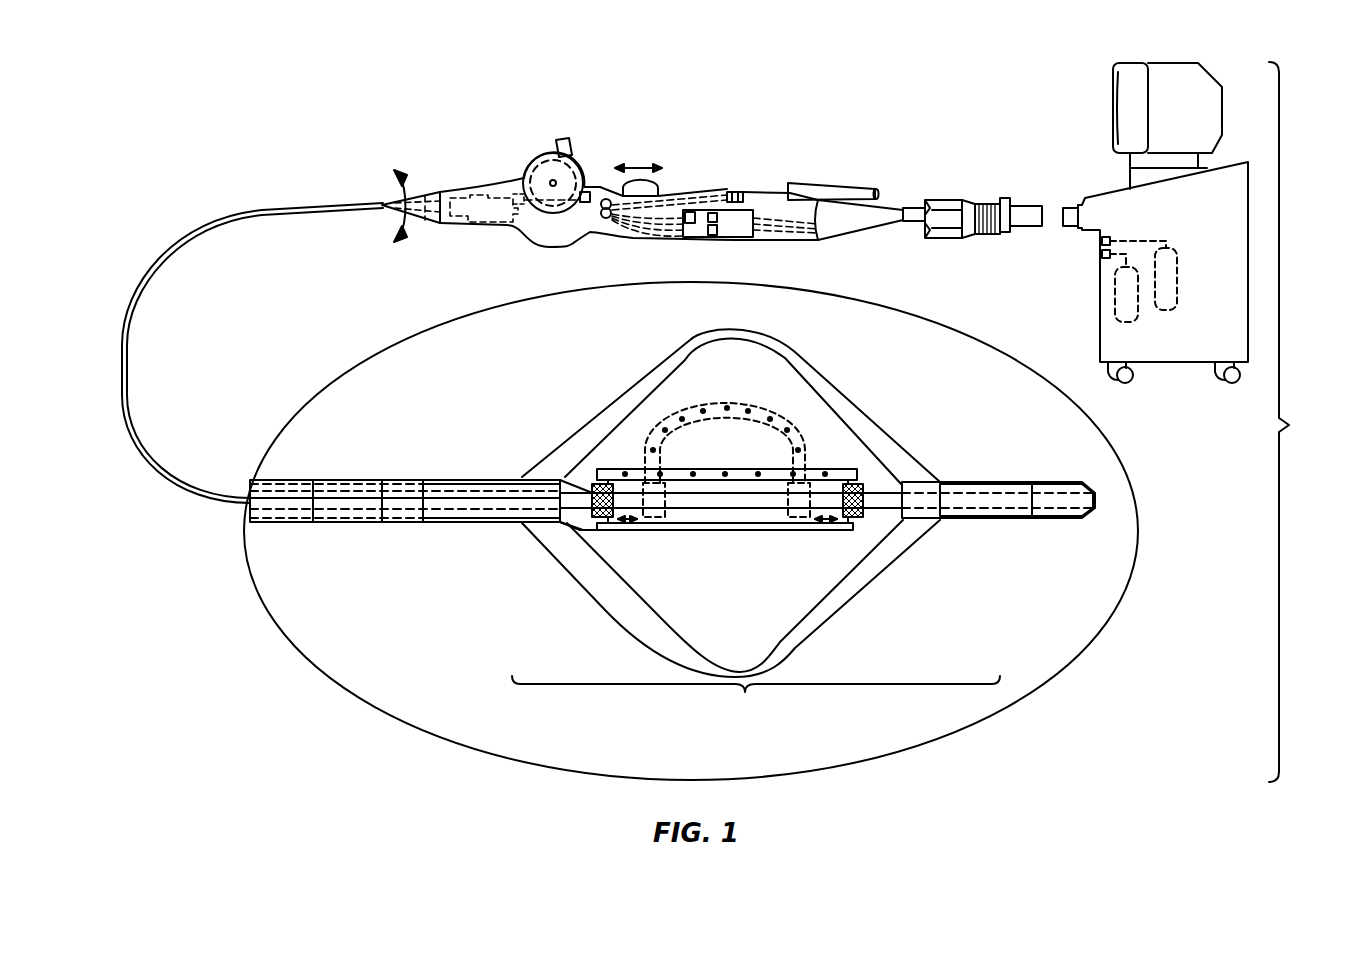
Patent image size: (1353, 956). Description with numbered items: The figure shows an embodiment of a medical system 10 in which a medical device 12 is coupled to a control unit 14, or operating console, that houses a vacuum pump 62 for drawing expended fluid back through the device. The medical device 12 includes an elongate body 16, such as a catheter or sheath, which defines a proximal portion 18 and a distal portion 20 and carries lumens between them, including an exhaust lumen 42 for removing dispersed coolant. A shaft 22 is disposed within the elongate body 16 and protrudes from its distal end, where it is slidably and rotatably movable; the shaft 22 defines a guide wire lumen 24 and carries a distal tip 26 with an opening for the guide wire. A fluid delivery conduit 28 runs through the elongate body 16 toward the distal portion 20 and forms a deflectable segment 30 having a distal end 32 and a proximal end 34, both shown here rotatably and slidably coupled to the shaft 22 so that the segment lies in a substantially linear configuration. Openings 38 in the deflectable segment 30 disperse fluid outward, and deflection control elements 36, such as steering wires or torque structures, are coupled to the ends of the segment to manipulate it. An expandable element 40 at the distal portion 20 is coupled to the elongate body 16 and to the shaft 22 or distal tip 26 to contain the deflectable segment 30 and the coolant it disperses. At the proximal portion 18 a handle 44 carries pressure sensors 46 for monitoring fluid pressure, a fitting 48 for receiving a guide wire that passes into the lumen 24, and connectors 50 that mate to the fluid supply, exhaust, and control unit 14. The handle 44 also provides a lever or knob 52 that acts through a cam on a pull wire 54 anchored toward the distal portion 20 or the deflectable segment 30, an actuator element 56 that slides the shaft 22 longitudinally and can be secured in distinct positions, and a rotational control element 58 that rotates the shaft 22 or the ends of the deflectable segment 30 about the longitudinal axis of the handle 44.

The medical system 10 is at (1298, 422).
The medical device 12 is at (772, 132).
The control unit 14 is at (1152, 223).
The elongate body 16 is at (242, 208).
The proximal portion 18 is at (382, 210).
The distal portion 20 is at (1131, 315).
The shaft 22 is at (885, 495).
The lumen 24 is at (1048, 518).
The distal tip 26 is at (1048, 482).
The fluid delivery conduit 28 is at (355, 516).
The deflectable segment 30 is at (612, 475).
The distal end 32 is at (865, 505).
The proximal end 34 is at (590, 498).
The deflection control elements 36 is at (572, 532).
The openings 38 is at (725, 474).
The expandable element 40 is at (605, 610).
The exhaust lumen 42 is at (355, 485).
The handle 44 is at (525, 235).
The pressure sensors 46 is at (467, 200).
The fitting 48 is at (850, 185).
The connectors 50 is at (1020, 208).
The lever or knob 52 is at (564, 140).
The pull wire 54 is at (522, 197).
The actuator element 56 is at (638, 180).
The rotational control element 58 is at (398, 200).
The vacuum pump 62 is at (1170, 273).